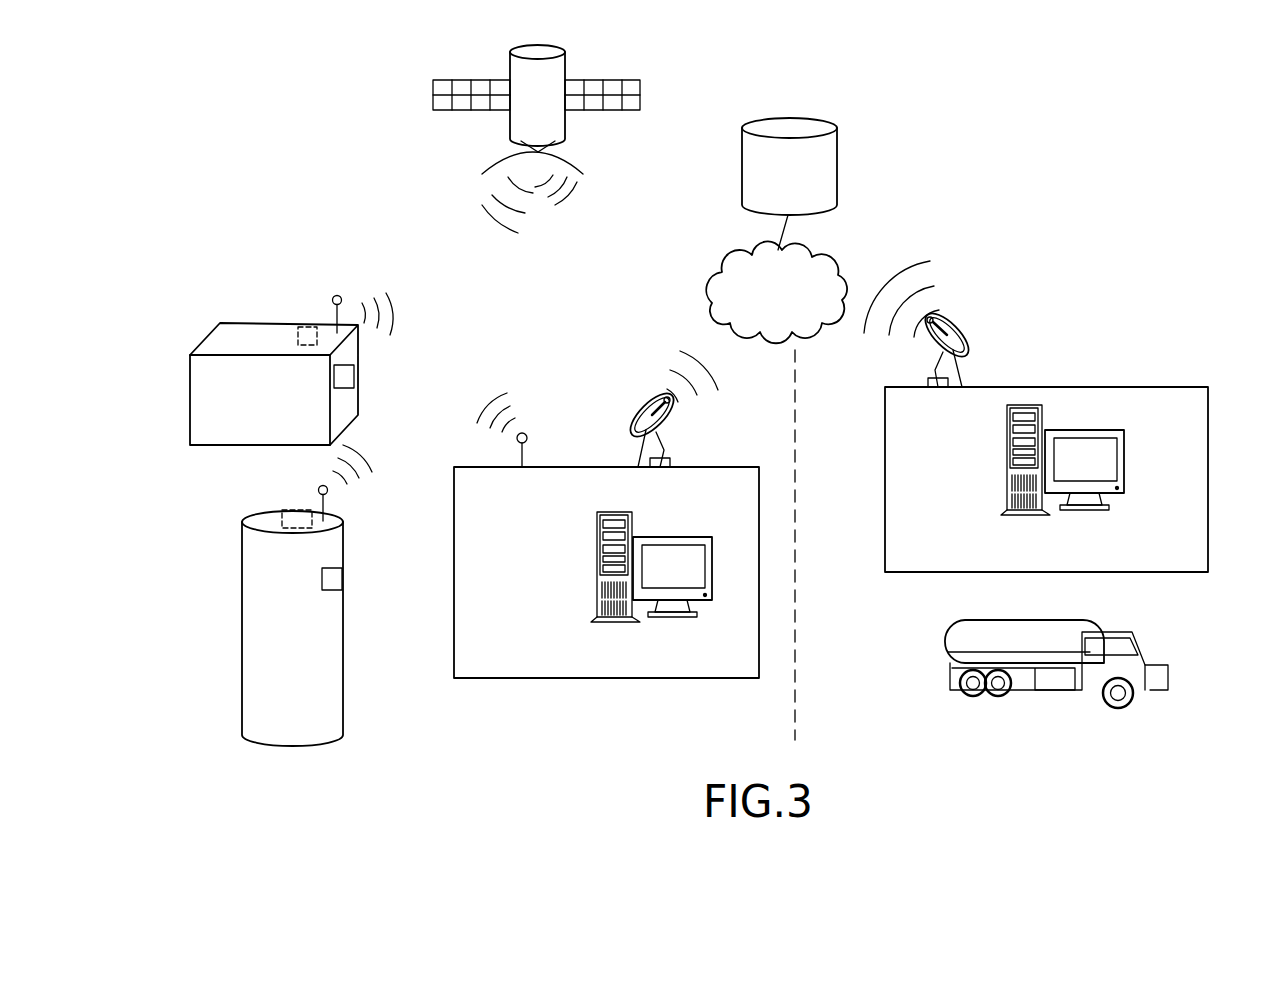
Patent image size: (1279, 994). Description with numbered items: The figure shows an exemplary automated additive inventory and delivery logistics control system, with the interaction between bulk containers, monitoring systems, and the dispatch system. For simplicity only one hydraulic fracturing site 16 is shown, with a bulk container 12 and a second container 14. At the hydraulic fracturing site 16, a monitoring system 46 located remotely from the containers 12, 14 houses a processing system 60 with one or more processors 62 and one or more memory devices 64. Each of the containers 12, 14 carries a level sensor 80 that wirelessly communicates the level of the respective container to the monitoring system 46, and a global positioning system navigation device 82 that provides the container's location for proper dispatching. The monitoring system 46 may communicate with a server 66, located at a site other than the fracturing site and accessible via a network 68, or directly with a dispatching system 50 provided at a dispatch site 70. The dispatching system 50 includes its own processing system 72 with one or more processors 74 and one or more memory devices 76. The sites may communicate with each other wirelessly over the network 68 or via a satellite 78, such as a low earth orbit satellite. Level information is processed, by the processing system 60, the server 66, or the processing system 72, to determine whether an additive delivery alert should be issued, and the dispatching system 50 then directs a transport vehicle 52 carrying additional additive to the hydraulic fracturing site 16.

The bulk container 12 is at (272, 419).
The container 14 is at (309, 649).
The hydraulic fracturing site 16 is at (446, 793).
The monitoring system 46 is at (506, 517).
The dispatching system 50 is at (931, 436).
The transport vehicle 52 is at (1034, 653).
The processing system 60 is at (689, 581).
The processor 62 is at (608, 590).
The memory device 64 is at (612, 520).
The server 66 is at (802, 182).
The network 68 is at (788, 303).
The dispatch site 70 is at (1042, 793).
The processing system 72 is at (1099, 476).
The processor 74 is at (1015, 487).
The memory device 76 is at (1020, 413).
The satellite 78 is at (552, 107).
The level sensor 80 is at (305, 336).
The global positioning system navigation device 82 is at (354, 376).